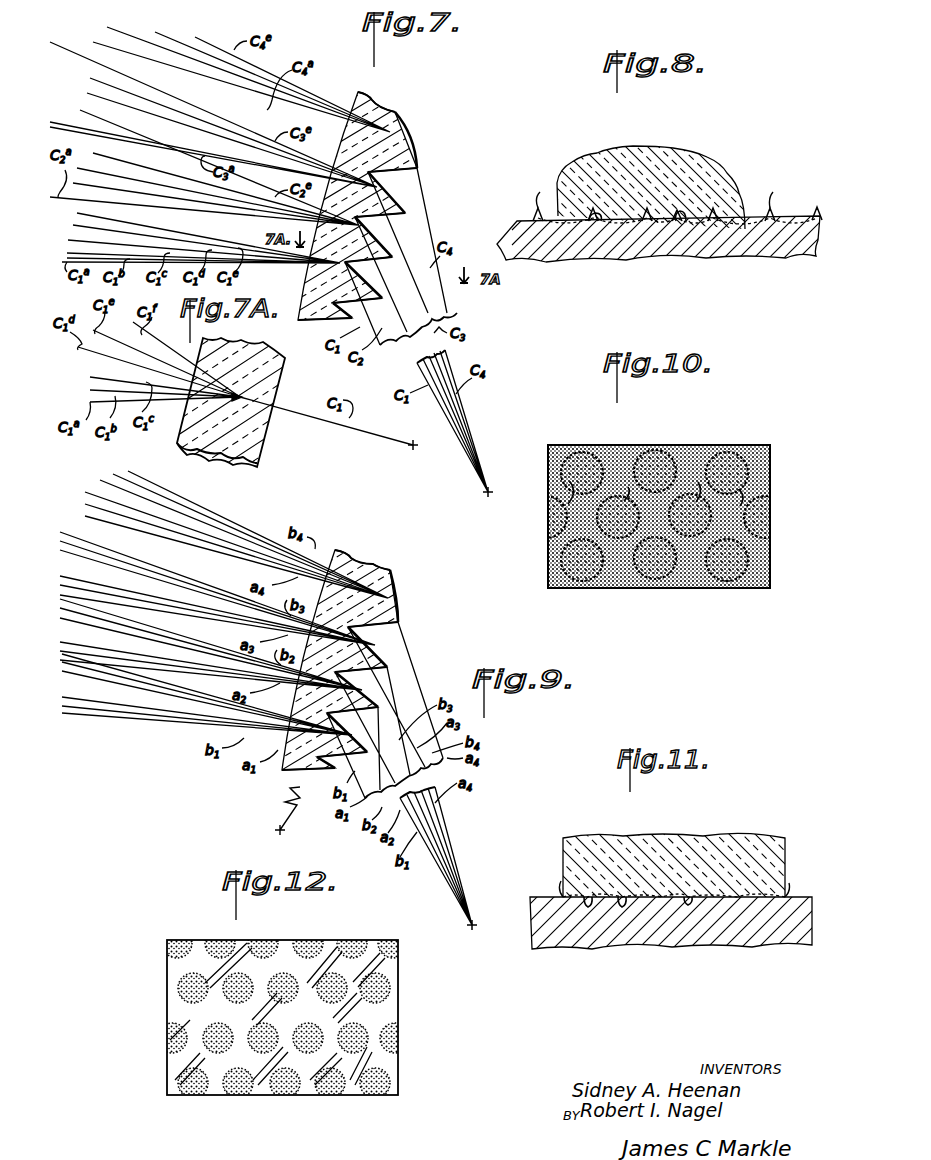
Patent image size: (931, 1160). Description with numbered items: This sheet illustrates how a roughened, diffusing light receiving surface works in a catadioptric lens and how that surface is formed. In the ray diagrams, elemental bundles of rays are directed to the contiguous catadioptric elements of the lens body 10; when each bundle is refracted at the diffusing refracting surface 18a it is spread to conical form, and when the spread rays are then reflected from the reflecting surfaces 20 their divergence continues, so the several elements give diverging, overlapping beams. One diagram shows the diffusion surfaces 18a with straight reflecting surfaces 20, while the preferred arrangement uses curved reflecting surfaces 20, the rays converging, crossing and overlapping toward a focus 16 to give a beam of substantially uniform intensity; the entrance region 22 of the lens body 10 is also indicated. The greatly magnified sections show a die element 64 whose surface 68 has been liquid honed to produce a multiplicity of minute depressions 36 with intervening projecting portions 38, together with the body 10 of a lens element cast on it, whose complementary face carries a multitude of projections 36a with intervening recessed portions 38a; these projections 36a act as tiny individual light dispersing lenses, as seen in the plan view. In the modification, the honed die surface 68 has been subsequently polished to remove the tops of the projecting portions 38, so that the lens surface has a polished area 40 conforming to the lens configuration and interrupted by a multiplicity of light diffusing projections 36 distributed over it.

In FIG. 7, the lens body 10 is at (371, 206).
In FIG. 7A, the lens body 10 is at (275, 389).
In FIG. 8, the lens body 10 is at (675, 142).
In FIG. 9, the lens body 10 is at (363, 657).
In FIG. 10, the lens body 10 is at (649, 501).
In FIG. 11, the lens body 10 is at (759, 832).
In FIG. 7, the entrance face of panel 22 is at (342, 102).
In FIG. 7A, the entrance face of panel 22 is at (187, 422).
In FIG. 9, the entrance face of panel 22 is at (331, 551).
In FIG. 7, the reflecting surfaces 20 is at (413, 148).
In FIG. 9, the reflecting surfaces 20 is at (387, 605).
In FIG. 7, the diffusing refracting surface 18a is at (412, 169).
In FIG. 9, the diffusing refracting surface 18a is at (402, 625).
In FIG. 7, the focal point 16 is at (480, 492).
In FIG. 7A, the focal point 16 is at (412, 447).
In FIG. 9, the focal point 16 is at (470, 925).
In FIG. 8, the die element 64 is at (572, 262).
In FIG. 11, the die element 64 is at (585, 943).
In FIG. 8, the minute depressions 36 is at (647, 226).
In FIG. 11, the minute depressions 36 is at (737, 897).
In FIG. 8, the projections 36a is at (595, 222).
In FIG. 10, the projections 36a is at (720, 472).
In FIG. 11, the projections 36a is at (688, 896).
In FIG. 12, the projections 36a is at (383, 993).
In FIG. 8, the projecting portions 38 is at (710, 212).
In FIG. 8, the recessed portions 38a is at (686, 218).
In FIG. 10, the recessed portions 38a is at (620, 480).
In FIG. 8, the die surface 68 is at (531, 204).
In FIG. 11, the die surface 68 is at (552, 892).
In FIG. 11, the polished area 40 is at (622, 895).
In FIG. 12, the polished area 40 is at (237, 1018).